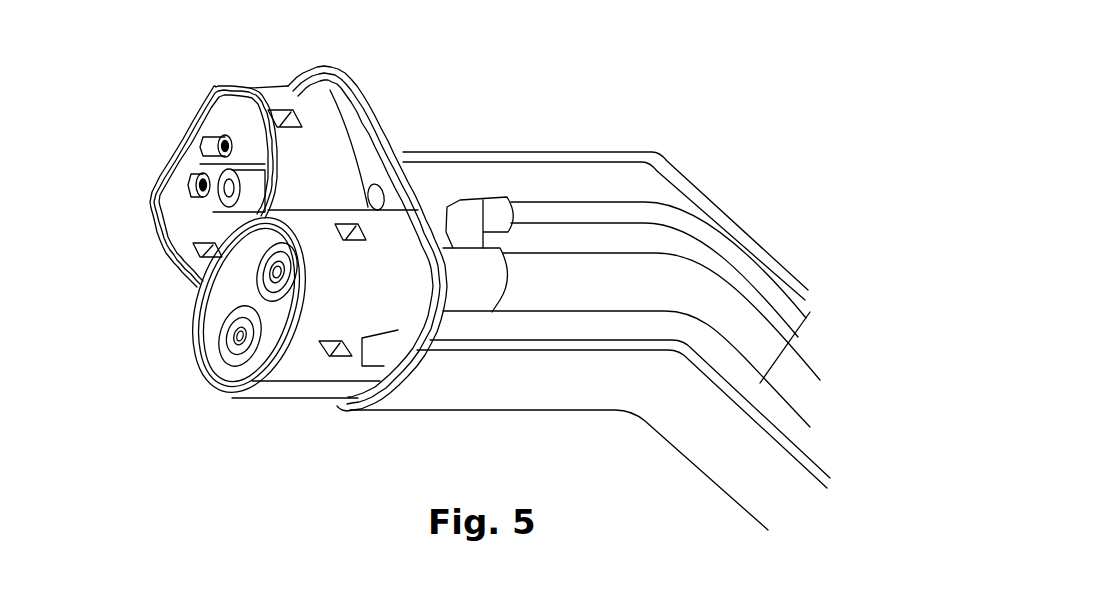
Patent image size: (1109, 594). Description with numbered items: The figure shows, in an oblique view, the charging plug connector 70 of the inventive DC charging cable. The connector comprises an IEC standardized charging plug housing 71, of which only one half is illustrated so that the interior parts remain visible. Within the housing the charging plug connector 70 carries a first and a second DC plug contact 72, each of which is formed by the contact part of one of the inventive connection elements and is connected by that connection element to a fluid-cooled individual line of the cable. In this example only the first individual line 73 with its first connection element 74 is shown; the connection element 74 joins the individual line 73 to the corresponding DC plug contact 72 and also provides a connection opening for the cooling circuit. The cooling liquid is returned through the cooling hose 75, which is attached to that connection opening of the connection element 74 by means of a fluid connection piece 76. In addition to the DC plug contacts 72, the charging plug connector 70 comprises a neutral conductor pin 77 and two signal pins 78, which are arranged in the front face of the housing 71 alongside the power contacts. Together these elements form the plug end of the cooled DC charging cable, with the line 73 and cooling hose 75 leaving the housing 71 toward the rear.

The charging plug connector 70 is at (636, 104).
The charging plug housing 71 is at (443, 150).
The DC plug contact 72 is at (236, 338).
The individual line 73 is at (630, 296).
The connection element 74 is at (477, 293).
The cooling hose 75 is at (548, 213).
The fluid connection piece 76 is at (477, 212).
The neutral conductor pin 77 is at (217, 202).
The signal pin 78 is at (200, 188).